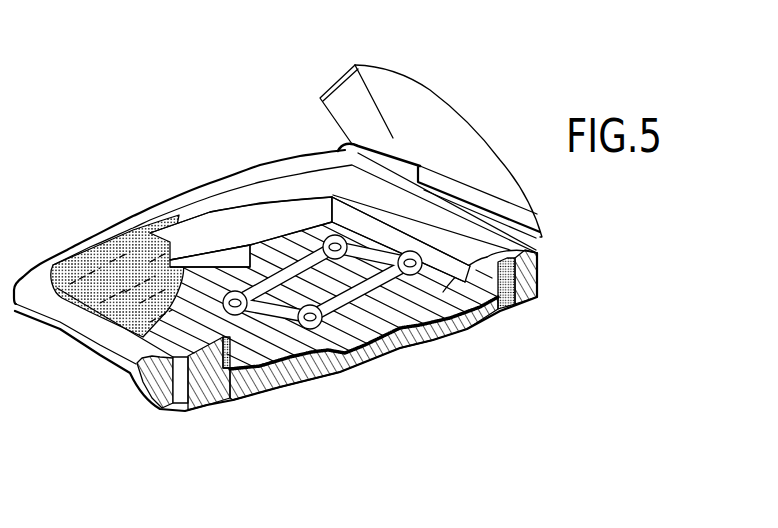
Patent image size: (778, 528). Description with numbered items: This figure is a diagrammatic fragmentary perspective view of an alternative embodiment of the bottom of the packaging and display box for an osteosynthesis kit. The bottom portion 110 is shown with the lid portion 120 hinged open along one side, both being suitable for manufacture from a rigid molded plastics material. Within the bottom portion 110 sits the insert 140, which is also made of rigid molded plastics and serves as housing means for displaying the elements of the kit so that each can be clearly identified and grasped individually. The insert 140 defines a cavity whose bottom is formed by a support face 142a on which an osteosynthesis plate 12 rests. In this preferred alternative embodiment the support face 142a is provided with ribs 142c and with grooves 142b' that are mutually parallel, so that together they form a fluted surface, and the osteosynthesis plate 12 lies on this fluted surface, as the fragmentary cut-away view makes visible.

The bottom portion 110 is at (128, 210).
The lid portion 120 is at (474, 120).
The osteosynthesis plate 12 is at (440, 280).
The insert 140 is at (307, 197).
The support face 142a is at (537, 263).
The grooves 142b' is at (310, 380).
The ribs 142c is at (408, 322).